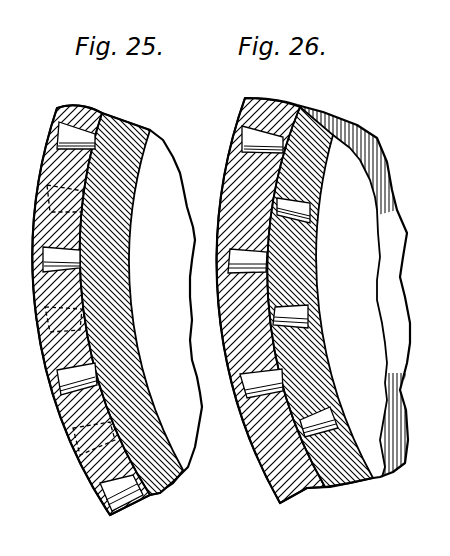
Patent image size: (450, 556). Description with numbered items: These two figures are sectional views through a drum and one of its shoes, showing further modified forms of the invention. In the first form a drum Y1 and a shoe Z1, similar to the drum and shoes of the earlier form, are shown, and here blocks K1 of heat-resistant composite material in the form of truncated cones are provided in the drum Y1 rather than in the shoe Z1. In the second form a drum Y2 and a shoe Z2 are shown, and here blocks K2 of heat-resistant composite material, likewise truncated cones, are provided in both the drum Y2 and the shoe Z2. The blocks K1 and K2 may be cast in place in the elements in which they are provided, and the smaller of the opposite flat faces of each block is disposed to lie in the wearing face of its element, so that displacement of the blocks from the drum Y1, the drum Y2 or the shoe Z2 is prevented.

In FIG. 25, the blocks K1 is at (62, 134).
In FIG. 25, the drum Y1 is at (90, 110).
In FIG. 25, the shoe Z1 is at (137, 136).
In FIG. 26, the blocks K2 is at (257, 138).
In FIG. 26, the drum Y2 is at (280, 110).
In FIG. 26, the shoe Z2 is at (330, 143).